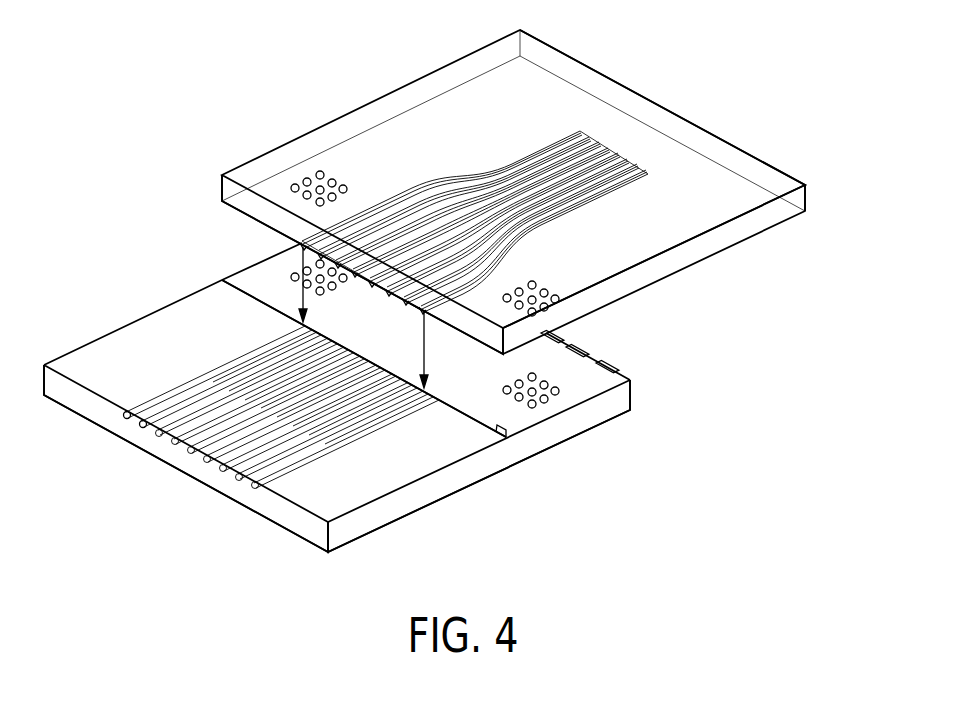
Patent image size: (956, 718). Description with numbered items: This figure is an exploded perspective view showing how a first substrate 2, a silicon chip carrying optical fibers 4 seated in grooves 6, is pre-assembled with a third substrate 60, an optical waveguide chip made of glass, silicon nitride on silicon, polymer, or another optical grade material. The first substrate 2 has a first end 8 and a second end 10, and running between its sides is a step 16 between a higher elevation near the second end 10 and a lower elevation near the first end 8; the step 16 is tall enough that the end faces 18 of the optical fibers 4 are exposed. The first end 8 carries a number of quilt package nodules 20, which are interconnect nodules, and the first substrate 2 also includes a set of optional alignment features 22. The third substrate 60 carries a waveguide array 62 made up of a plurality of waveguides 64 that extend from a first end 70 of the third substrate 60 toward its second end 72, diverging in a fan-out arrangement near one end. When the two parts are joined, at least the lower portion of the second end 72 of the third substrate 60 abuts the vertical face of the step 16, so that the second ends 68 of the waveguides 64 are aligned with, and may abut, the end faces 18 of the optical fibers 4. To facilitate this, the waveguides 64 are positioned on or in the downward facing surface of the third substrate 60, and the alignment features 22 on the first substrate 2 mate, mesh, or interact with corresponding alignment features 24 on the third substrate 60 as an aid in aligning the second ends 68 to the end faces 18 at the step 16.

The first substrate 2 is at (157, 316).
The optical fibers 4 is at (126, 416).
The grooves 6 is at (129, 418).
The first end 8 is at (623, 399).
The second end 10 is at (298, 523).
The step 16 is at (511, 434).
The end faces 18 is at (367, 360).
The quilt package (QP) nodules 20 is at (617, 363).
The alignment features 22 is at (560, 412).
The alignment features 24 is at (292, 163).
The third substrate 60 is at (377, 88).
The waveguide array 62 is at (630, 208).
The waveguides 64 is at (472, 190).
The second ends 68 is at (382, 290).
The first end 70 is at (807, 183).
The second end 72 is at (243, 201).